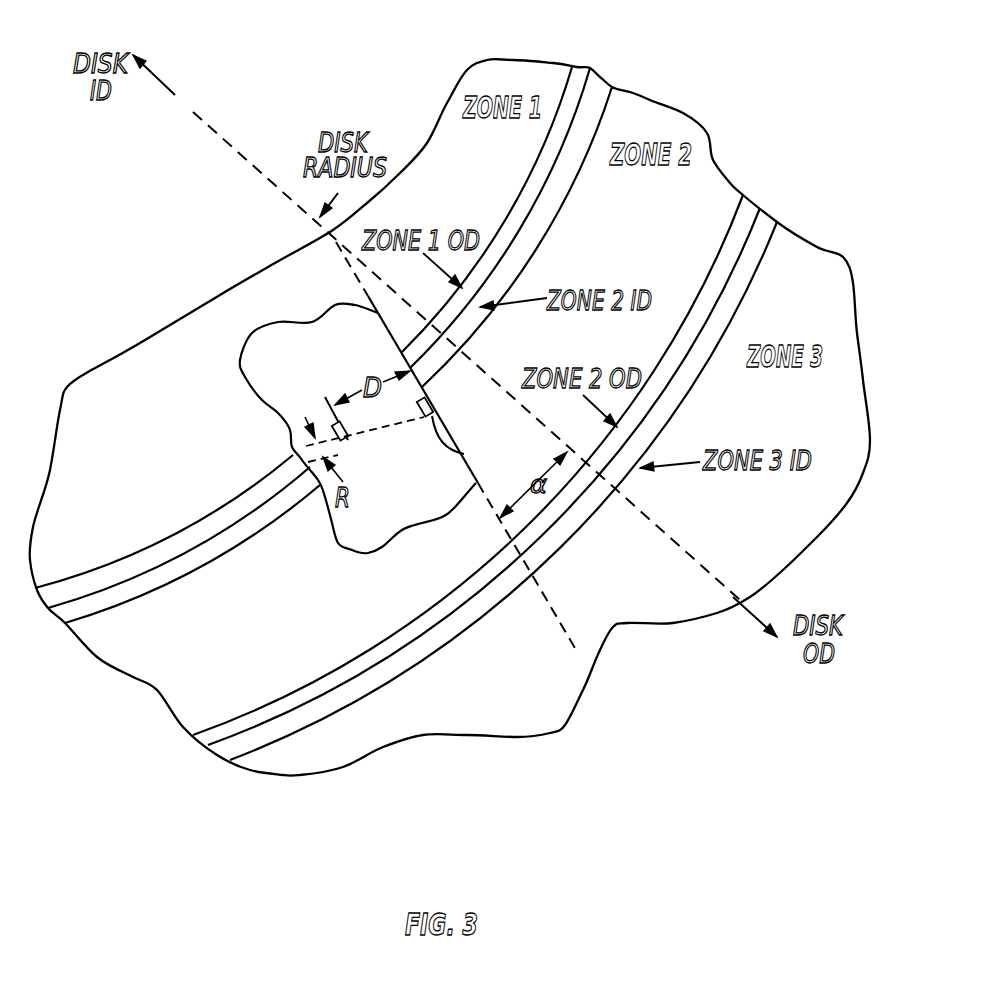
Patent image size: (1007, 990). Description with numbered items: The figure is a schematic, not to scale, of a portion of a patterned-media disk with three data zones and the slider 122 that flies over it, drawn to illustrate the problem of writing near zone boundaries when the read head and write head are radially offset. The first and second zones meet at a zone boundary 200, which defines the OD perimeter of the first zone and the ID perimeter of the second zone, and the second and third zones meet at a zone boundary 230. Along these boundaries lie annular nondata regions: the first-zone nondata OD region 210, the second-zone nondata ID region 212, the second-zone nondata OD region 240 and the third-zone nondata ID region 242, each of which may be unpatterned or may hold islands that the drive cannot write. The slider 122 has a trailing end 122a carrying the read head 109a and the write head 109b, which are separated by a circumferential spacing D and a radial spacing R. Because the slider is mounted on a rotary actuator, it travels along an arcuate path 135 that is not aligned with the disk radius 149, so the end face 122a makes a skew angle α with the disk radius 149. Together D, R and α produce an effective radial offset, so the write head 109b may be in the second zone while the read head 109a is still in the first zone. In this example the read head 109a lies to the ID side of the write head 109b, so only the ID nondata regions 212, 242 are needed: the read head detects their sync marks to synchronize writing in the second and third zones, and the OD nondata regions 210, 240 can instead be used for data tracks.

The read head 109a is at (347, 440).
The write head 109b is at (462, 454).
The slider 122 is at (334, 514).
The trailing end 122a is at (448, 436).
The arcuate path 135 is at (553, 608).
The disk radius 149 is at (253, 163).
The zone boundary 200 is at (527, 211).
The Zone 1 nondata OD region 210 is at (533, 177).
The Zone 2 nondata ID region 212 is at (553, 190).
The zone boundary 230 is at (732, 280).
The Zone 2 nondata OD region 240 is at (730, 243).
The Zone 3 nondata ID region 242 is at (743, 288).